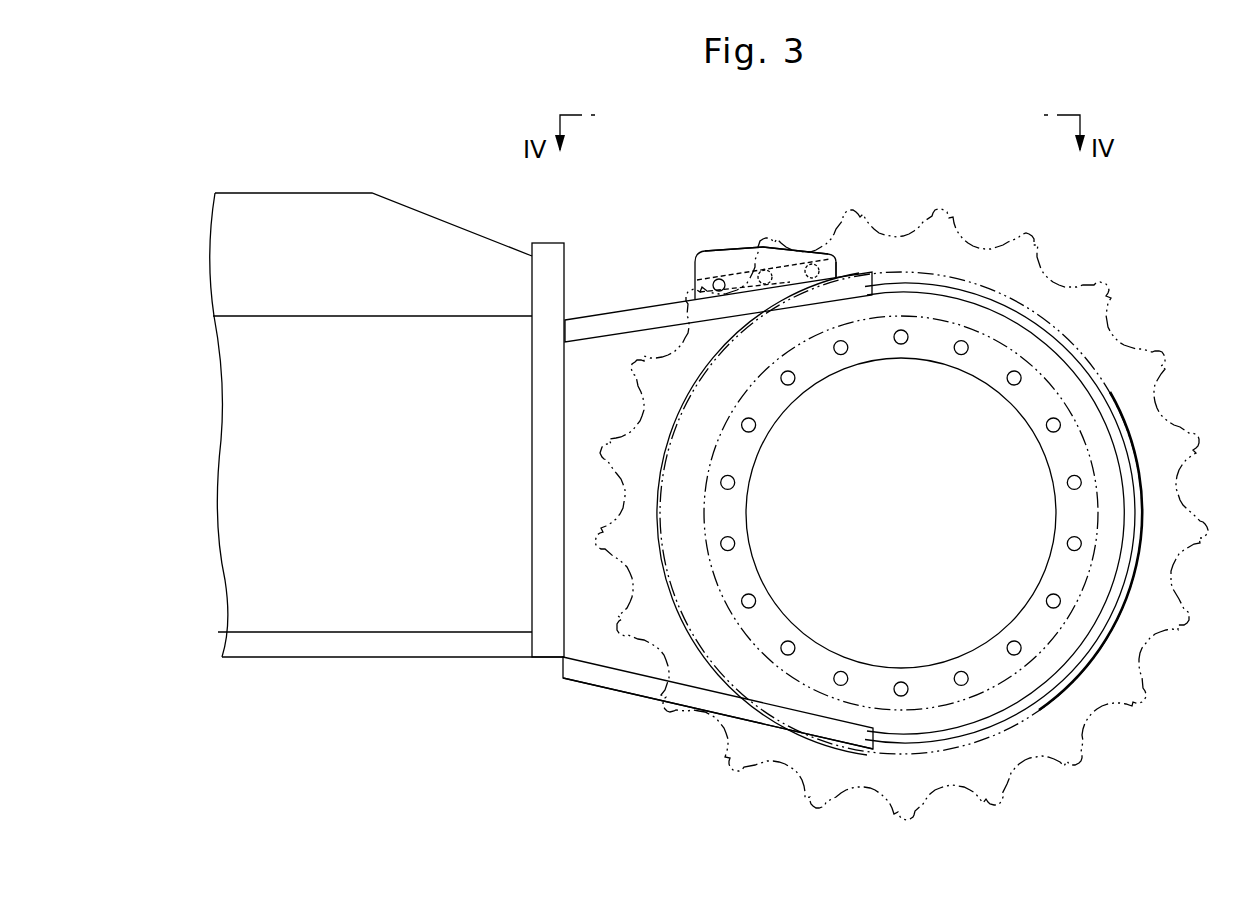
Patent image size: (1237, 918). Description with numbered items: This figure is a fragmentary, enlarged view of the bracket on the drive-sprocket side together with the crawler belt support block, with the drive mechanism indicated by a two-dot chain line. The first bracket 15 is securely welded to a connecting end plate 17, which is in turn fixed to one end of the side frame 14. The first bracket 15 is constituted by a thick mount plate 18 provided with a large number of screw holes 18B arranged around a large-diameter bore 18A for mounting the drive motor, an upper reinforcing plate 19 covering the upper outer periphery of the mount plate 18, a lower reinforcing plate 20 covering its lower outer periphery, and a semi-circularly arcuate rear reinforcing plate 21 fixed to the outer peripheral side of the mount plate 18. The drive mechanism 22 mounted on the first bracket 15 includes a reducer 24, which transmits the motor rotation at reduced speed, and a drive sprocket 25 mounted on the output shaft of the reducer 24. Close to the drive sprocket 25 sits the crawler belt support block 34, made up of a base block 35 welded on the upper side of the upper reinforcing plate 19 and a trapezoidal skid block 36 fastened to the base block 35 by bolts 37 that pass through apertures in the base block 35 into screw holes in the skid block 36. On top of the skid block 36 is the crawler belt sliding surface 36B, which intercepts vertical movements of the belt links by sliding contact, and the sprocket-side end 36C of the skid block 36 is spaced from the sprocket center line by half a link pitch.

The side frame 14 is at (310, 618).
The first bracket 15 is at (584, 696).
The connecting end plate 17 is at (547, 645).
The mount plate 18 is at (597, 373).
The large-diameter bore 18A is at (992, 630).
The screw holes 18B is at (1080, 540).
The upper reinforcing plate 19 is at (634, 318).
The lower reinforcing plate 20 is at (633, 686).
The rear reinforcing plate 21 is at (1120, 648).
The drive mechanism 22 is at (1150, 340).
The reducer 24 is at (1073, 452).
The drive sprocket 25 is at (1108, 293).
The crawler belt support block 34 is at (852, 244).
The base block 35 is at (742, 265).
The skid block 36 is at (700, 250).
The crawler belt sliding surface 36B is at (775, 248).
The sprocket-side end of the skid block 36C is at (845, 260).
The bolts 37 is at (719, 279).